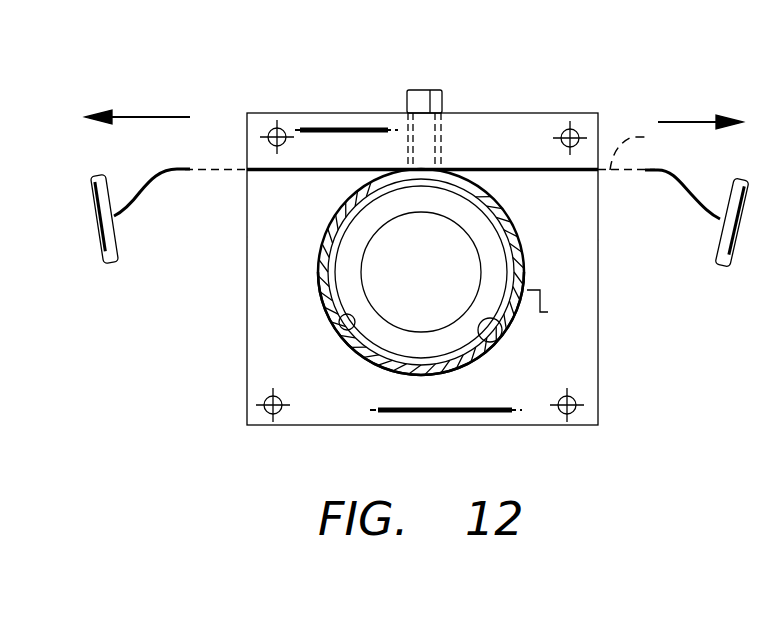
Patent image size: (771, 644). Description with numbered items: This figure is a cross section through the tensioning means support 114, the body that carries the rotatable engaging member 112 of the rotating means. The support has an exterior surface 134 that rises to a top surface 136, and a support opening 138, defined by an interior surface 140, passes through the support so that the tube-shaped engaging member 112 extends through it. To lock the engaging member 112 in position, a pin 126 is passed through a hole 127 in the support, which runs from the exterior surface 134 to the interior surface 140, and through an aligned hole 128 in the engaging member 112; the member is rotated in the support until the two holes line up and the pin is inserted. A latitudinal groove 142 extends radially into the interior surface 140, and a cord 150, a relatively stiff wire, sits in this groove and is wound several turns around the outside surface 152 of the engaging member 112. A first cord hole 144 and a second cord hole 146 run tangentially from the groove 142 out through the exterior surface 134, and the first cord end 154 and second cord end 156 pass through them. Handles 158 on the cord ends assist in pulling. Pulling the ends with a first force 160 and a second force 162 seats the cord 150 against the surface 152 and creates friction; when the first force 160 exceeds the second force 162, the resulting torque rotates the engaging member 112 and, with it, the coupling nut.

The engaging member 112 is at (327, 248).
The tensioning means support 114 is at (497, 113).
The pin 126 is at (422, 90).
The hole 127 is at (405, 142).
The hole 128 is at (452, 170).
The exterior surface 134 is at (247, 237).
The top surface 136 is at (577, 370).
The support opening 138 is at (348, 295).
The interior surface 140 is at (350, 323).
The latitudinal groove 142 is at (383, 373).
The first cord hole 144 is at (537, 172).
The second cord hole 146 is at (330, 172).
The cord 150 is at (648, 137).
The outside surface 152 is at (487, 345).
The first cord end 154 is at (718, 218).
The second cord end 156 is at (122, 217).
The handles 158 is at (100, 233).
The first force 160 is at (700, 106).
The second force 162 is at (137, 105).